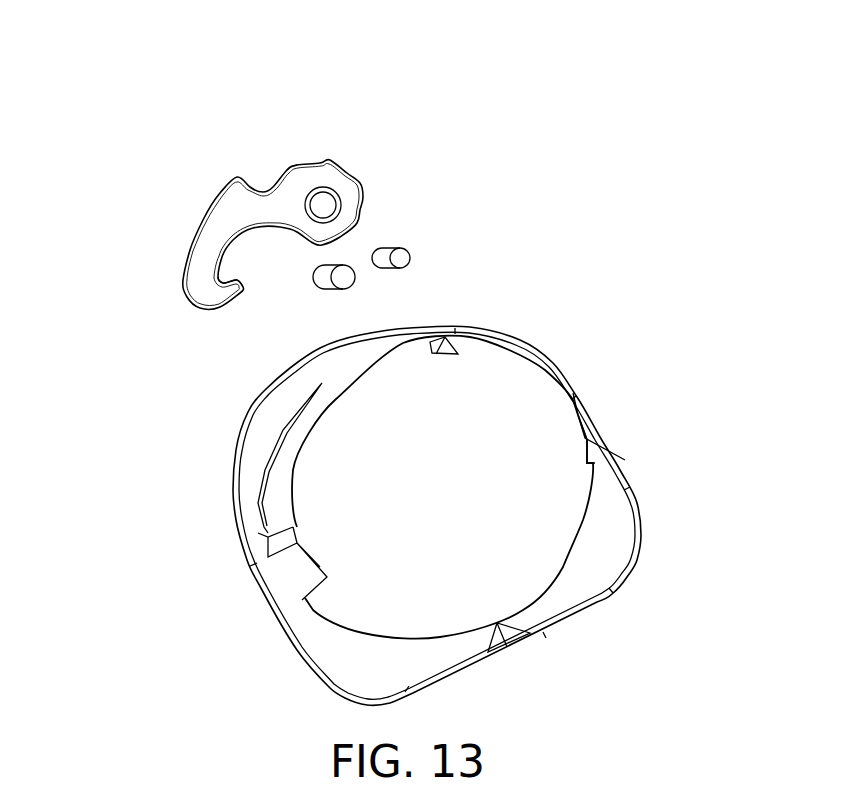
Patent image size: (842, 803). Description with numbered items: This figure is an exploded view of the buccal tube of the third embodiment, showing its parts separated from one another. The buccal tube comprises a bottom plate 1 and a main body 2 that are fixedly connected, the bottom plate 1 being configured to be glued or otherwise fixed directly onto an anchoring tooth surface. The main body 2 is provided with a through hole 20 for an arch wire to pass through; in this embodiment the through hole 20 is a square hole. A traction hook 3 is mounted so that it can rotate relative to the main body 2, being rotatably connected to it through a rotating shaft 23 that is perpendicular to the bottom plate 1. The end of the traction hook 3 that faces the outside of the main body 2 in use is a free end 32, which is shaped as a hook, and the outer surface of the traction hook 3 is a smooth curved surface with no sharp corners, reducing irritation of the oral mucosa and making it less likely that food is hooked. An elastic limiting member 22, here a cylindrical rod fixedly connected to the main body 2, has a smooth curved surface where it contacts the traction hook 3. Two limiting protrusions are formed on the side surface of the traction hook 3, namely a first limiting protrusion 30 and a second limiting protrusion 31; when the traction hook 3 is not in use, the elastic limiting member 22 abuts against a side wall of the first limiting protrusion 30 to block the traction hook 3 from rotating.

The bottom plate 1 is at (362, 662).
The main body 2 is at (563, 510).
The through hole 20 is at (610, 457).
The elastic limiting member 22 is at (398, 257).
The rotating shaft 23 is at (343, 278).
The traction hook 3 is at (207, 243).
The first limiting protrusion 30 is at (338, 178).
The second limiting protrusion 31 is at (293, 177).
The free end 32 is at (210, 298).